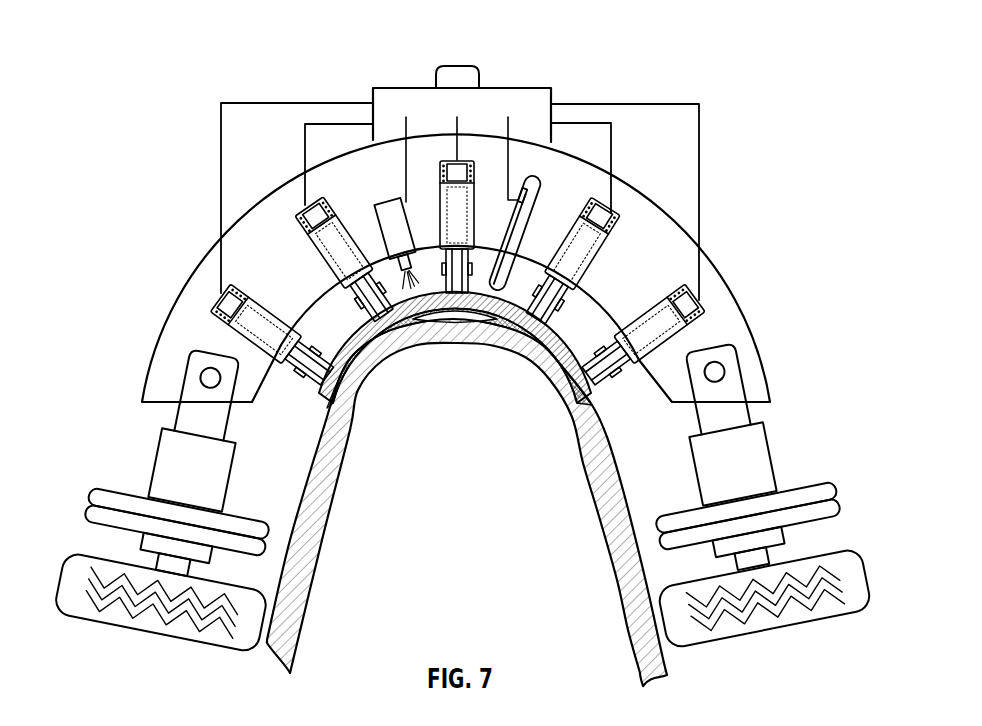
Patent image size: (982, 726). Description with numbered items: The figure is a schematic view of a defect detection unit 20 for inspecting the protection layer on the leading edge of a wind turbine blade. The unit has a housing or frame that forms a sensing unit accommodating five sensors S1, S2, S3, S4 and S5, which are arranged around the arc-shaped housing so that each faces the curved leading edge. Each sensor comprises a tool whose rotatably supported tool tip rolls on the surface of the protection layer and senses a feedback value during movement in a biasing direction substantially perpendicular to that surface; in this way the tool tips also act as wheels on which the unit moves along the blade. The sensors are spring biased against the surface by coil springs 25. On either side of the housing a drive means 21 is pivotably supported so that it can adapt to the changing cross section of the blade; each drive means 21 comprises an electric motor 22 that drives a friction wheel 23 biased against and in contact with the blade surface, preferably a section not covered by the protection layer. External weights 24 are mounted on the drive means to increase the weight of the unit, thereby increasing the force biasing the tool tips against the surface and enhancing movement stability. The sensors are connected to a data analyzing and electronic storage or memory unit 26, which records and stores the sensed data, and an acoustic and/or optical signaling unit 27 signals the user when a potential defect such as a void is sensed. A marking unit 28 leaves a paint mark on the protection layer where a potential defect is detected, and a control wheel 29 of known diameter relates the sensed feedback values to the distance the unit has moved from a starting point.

The defect detection unit 20 is at (796, 176).
The drive means 21 is at (100, 446).
The electric motor 22 is at (177, 485).
The friction wheels 23 is at (148, 623).
The external weights 24 is at (110, 517).
The coil springs 25 is at (505, 263).
The data analyzing and electronic storage or memory unit 26 is at (446, 113).
The acoustic and/or optical signaling unit 27 is at (456, 72).
The marking unit 28 is at (388, 207).
The control wheel 29 is at (520, 223).
The sensor S1 is at (261, 337).
The sensor S2 is at (331, 261).
The sensor S3 is at (469, 214).
The sensor S4 is at (585, 262).
The sensor S5 is at (656, 337).